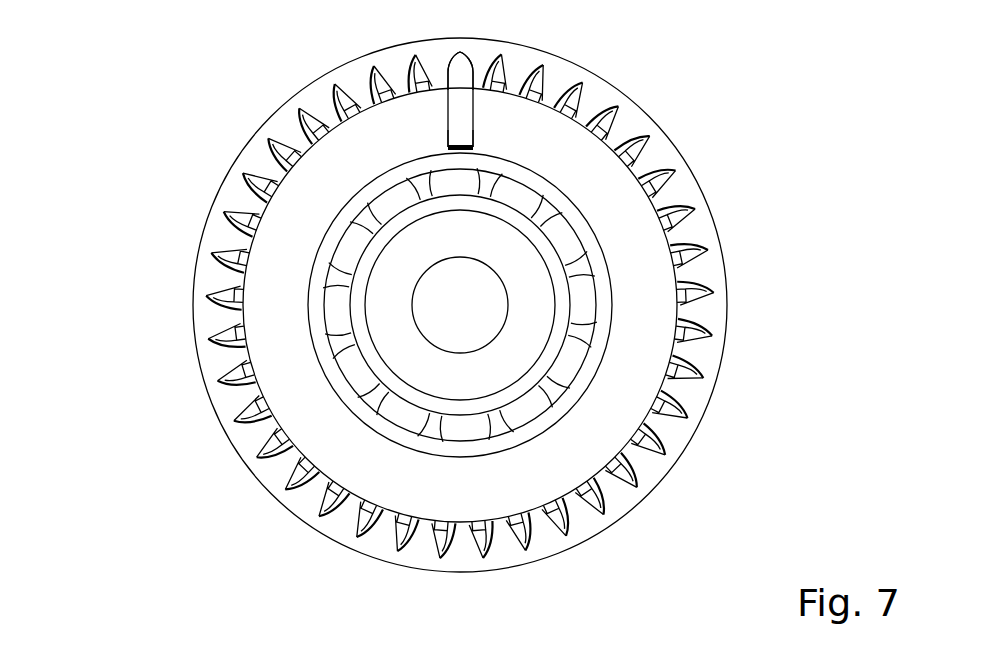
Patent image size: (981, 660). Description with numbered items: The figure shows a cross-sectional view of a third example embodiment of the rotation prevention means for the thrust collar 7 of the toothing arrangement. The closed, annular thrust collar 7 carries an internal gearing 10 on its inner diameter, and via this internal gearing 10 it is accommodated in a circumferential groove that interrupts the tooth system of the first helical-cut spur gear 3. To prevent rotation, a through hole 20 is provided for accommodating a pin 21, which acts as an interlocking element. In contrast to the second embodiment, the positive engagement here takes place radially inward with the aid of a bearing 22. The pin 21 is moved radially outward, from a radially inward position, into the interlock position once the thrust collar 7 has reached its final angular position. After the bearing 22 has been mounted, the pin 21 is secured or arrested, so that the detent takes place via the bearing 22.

The first helical-cut spur gear 3 is at (283, 257).
The thrust collar 7 is at (262, 156).
The internal gearing 10 is at (457, 53).
The through hole 20 is at (473, 117).
The pin 21 is at (458, 135).
The bearing 22 is at (350, 366).